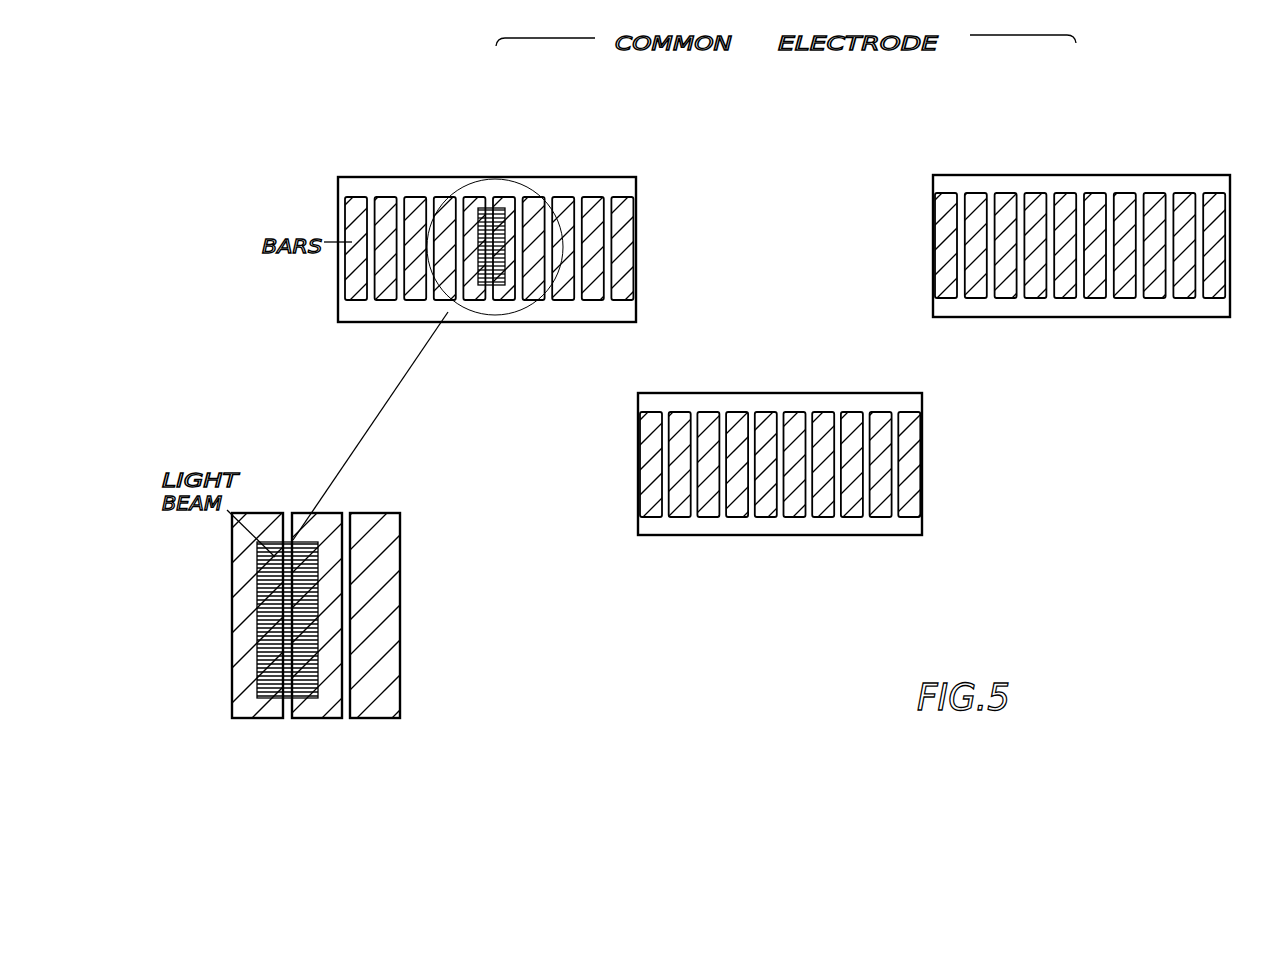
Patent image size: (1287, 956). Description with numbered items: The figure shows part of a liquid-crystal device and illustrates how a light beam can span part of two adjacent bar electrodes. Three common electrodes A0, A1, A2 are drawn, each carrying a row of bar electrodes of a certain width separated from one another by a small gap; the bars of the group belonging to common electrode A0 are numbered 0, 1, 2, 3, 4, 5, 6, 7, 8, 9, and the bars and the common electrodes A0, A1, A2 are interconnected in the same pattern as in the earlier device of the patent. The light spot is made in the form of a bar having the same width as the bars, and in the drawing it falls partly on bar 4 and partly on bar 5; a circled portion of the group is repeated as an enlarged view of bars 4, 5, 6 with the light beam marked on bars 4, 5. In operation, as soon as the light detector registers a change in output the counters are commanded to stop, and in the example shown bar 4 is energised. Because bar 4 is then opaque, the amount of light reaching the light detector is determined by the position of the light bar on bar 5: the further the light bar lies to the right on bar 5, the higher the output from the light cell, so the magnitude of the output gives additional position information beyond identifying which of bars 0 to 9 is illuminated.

The bar electrode 0 is at (356, 300).
The bar electrode 1 is at (386, 300).
The bar electrode 2 is at (415, 300).
The bar electrode 3 is at (445, 300).
The bar electrode 4 is at (474, 300).
The bar electrode 5 is at (504, 300).
The bar electrode 6 is at (534, 300).
The bar electrode 7 is at (563, 300).
The bar electrode 8 is at (593, 300).
The bar electrode 9 is at (622, 300).
The common electrode A0 is at (493, 177).
The common electrode A1 is at (787, 393).
The common electrode A2 is at (1082, 175).